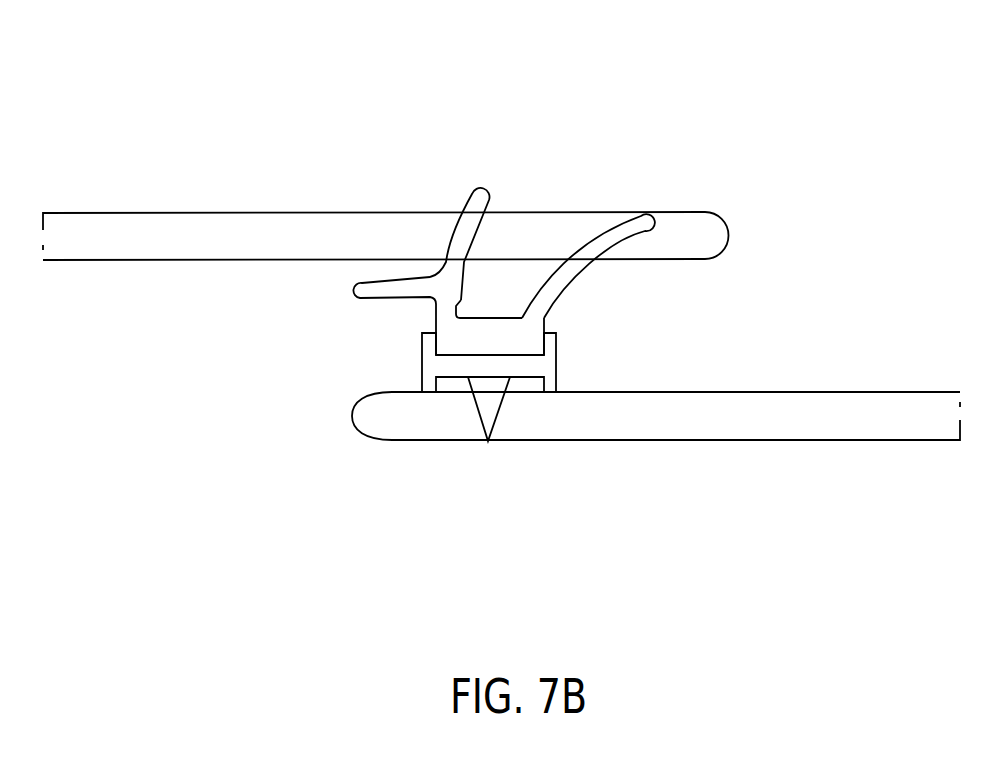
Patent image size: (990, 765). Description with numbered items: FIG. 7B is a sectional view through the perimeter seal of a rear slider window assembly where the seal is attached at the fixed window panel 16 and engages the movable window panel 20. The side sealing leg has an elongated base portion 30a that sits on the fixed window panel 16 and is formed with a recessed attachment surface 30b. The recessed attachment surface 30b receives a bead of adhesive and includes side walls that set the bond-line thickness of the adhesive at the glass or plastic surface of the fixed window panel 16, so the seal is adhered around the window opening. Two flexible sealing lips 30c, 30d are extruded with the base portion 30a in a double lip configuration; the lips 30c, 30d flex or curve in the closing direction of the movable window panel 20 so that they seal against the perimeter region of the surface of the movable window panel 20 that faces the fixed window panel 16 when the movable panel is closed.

The fixed window panel 16 is at (748, 430).
The movable window panel 20 is at (260, 222).
The base portion 30a is at (440, 363).
The attachment surface 30b is at (519, 377).
The sealing lip 30c is at (467, 200).
The sealing lip 30d is at (558, 278).